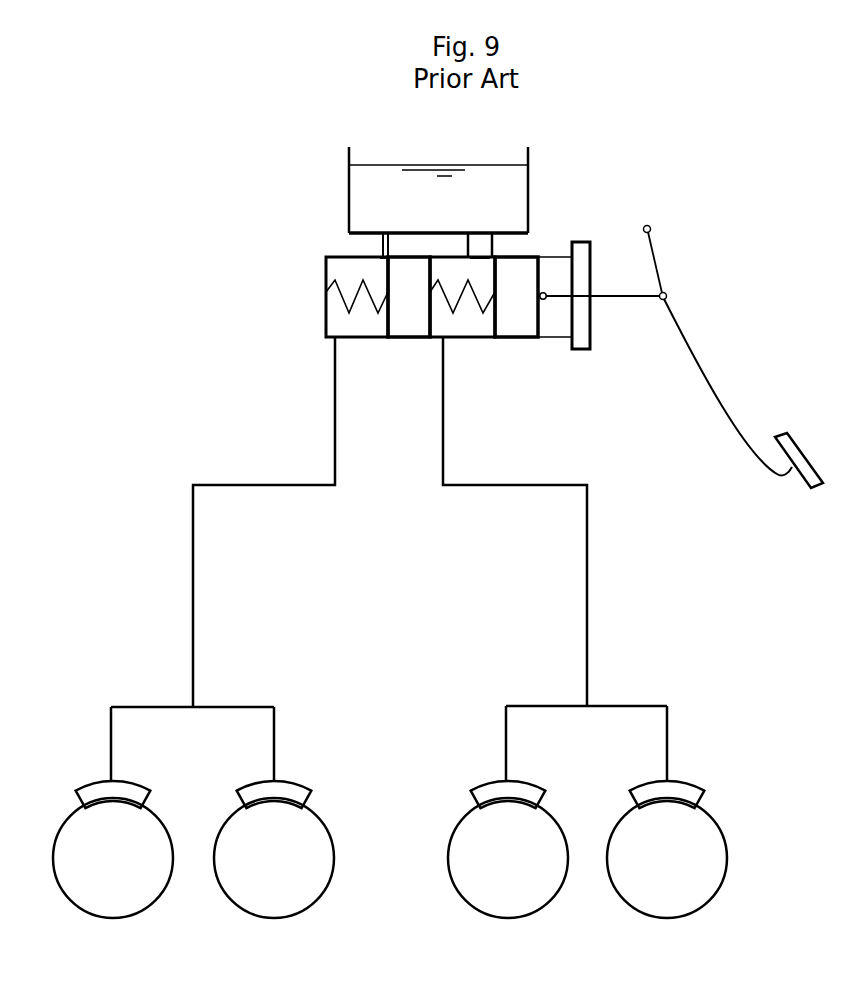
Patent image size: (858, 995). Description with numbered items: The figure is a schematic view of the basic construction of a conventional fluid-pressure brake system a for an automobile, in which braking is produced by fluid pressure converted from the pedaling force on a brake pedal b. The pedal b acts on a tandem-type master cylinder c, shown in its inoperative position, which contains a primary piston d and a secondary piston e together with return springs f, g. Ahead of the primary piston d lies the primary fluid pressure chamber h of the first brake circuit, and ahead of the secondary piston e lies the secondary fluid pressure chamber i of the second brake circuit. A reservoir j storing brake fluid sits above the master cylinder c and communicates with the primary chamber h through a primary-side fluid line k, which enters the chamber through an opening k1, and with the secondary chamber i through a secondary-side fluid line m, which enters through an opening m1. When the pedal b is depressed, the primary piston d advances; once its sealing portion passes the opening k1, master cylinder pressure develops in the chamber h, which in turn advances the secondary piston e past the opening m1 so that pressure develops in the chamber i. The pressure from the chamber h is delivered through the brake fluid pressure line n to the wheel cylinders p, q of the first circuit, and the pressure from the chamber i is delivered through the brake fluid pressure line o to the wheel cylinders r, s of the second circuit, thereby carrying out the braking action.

The brake system a is at (195, 350).
The brake pedal b is at (806, 462).
The tandem-type master cylinder c is at (548, 253).
The primary piston d is at (515, 317).
The secondary piston e is at (410, 322).
The return spring f is at (458, 305).
The return spring g is at (328, 303).
The primary fluid pressure chamber h is at (452, 325).
The secondary fluid pressure chamber i is at (357, 328).
The reservoir j is at (348, 177).
The primary-side fluid line k is at (494, 247).
The opening of the primary-side fluid line k1 is at (485, 262).
The secondary-side fluid line m is at (383, 246).
The opening of the secondary fluid line m1 is at (384, 258).
The brake fluid pressure line n is at (587, 584).
The brake fluid pressure line o is at (193, 584).
The wheel cylinder p is at (685, 792).
The wheel cylinder q is at (528, 795).
The wheel cylinder r is at (290, 795).
The wheel cylinder s is at (137, 795).